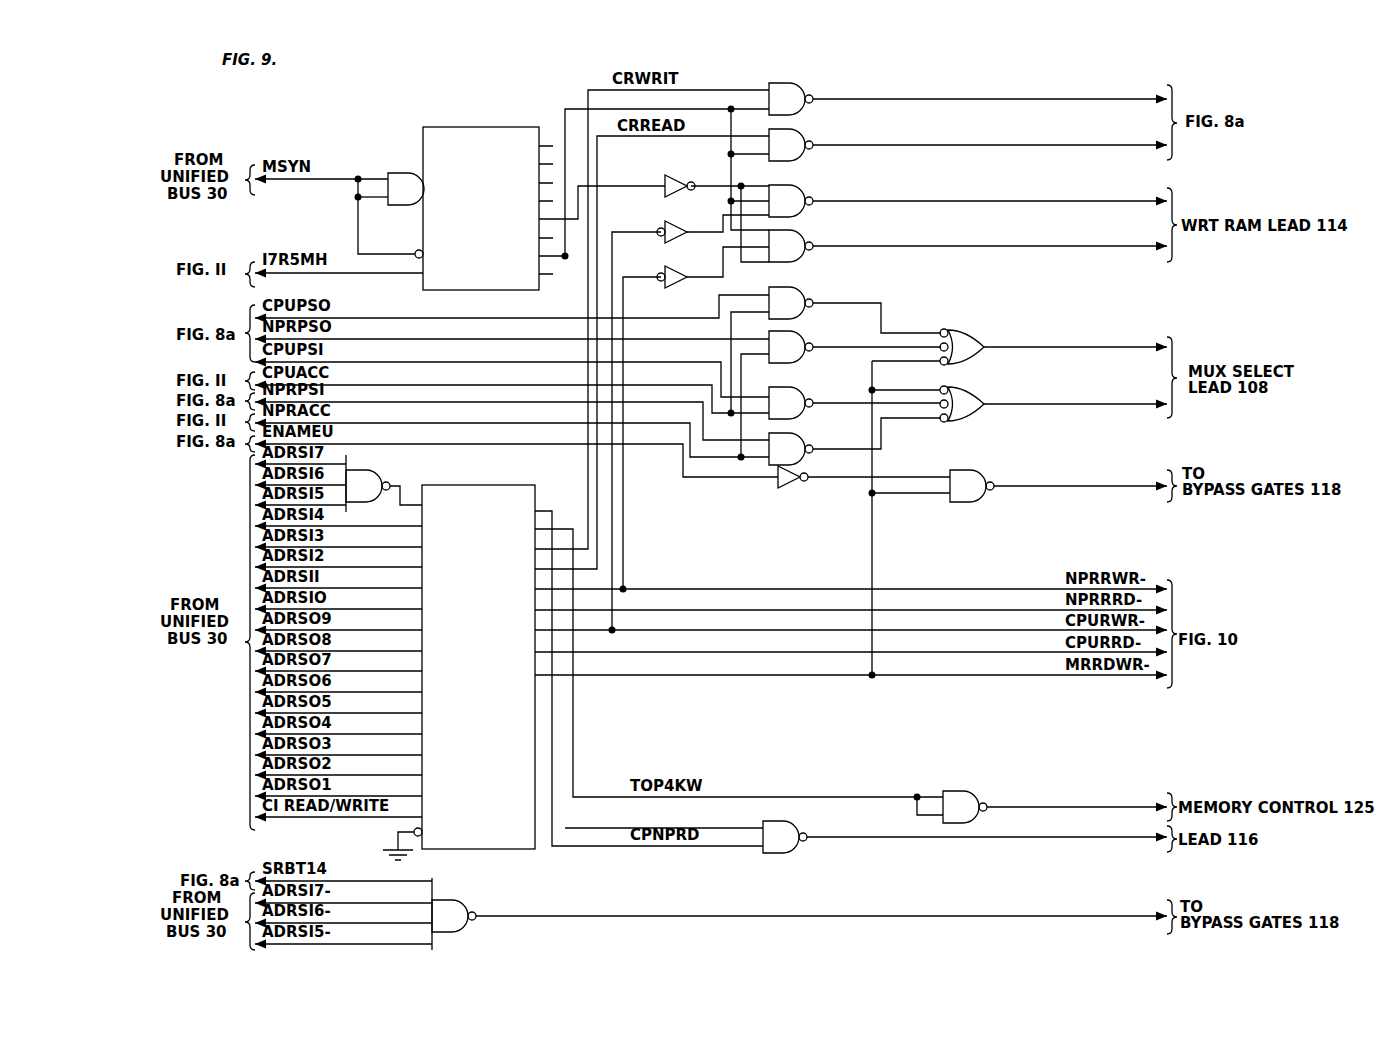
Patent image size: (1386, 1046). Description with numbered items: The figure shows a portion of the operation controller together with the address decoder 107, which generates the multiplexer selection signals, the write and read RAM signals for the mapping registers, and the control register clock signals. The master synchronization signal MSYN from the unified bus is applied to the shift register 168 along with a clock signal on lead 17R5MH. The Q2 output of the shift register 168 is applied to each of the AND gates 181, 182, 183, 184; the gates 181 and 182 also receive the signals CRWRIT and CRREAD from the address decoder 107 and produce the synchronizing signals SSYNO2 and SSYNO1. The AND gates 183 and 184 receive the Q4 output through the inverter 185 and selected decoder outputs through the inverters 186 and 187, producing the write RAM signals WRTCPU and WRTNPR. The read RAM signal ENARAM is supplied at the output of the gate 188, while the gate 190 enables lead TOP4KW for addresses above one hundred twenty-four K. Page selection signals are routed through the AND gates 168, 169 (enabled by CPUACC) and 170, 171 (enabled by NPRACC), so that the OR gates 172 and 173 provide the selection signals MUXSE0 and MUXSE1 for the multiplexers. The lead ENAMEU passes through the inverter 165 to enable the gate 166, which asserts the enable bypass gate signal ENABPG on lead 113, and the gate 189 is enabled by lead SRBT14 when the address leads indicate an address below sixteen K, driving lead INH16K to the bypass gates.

The shift register 168 is at (493, 127).
The AND gate 181 is at (968, 86).
The AND gate 182 is at (968, 137).
The AND gate 183 is at (968, 190).
The AND gate 184 is at (968, 238).
The inverter 185 is at (717, 206).
The inverter 186 is at (689, 415).
The inverter 187 is at (695, 418).
The AND gate 170 is at (855, 340).
The AND gate 169 is at (855, 394).
The AND gate 171 is at (855, 440).
The OR gate 172 is at (1053, 334).
The OR gate 173 is at (1053, 392).
The inverter 165 is at (864, 488).
The gate 166 is at (983, 471).
The lead 113 is at (1086, 459).
The address decoder 107 is at (467, 681).
The gate 190 is at (1041, 813).
The gate 188 is at (965, 848).
The gate 189 is at (799, 914).